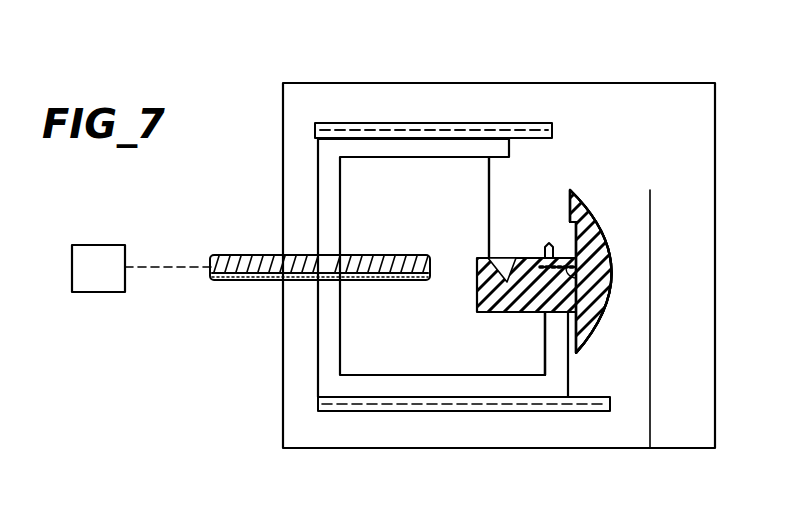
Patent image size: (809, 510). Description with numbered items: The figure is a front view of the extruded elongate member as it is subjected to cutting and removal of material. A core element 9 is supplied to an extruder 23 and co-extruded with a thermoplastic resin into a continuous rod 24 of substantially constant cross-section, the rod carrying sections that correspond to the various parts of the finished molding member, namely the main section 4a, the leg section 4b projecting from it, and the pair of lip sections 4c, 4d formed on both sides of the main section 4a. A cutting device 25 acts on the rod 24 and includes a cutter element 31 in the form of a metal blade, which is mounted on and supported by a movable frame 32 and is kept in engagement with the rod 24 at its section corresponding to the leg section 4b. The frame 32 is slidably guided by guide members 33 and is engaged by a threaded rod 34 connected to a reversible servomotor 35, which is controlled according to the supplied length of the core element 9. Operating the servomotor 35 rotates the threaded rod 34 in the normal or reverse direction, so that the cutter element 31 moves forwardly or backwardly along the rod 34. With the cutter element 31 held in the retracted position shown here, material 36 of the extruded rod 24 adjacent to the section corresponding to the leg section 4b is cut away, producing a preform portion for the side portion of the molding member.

The extruder 23 is at (717, 114).
The continuous rod 24 is at (603, 260).
The cutting device 25 is at (457, 122).
The core element 9 is at (603, 277).
The cutter element 31 is at (493, 180).
The movable frame 32 is at (330, 342).
The guide members 33 is at (412, 123).
The threaded rod 34 is at (237, 255).
The reversible servomotor 35 is at (103, 292).
The material 36 is at (497, 312).
The main section 4a is at (603, 303).
The leg section 4b is at (497, 262).
The lip section 4c is at (598, 207).
The lip section 4d is at (600, 333).